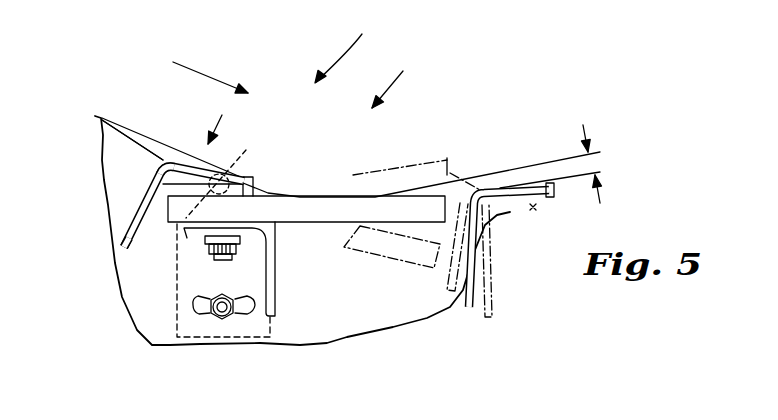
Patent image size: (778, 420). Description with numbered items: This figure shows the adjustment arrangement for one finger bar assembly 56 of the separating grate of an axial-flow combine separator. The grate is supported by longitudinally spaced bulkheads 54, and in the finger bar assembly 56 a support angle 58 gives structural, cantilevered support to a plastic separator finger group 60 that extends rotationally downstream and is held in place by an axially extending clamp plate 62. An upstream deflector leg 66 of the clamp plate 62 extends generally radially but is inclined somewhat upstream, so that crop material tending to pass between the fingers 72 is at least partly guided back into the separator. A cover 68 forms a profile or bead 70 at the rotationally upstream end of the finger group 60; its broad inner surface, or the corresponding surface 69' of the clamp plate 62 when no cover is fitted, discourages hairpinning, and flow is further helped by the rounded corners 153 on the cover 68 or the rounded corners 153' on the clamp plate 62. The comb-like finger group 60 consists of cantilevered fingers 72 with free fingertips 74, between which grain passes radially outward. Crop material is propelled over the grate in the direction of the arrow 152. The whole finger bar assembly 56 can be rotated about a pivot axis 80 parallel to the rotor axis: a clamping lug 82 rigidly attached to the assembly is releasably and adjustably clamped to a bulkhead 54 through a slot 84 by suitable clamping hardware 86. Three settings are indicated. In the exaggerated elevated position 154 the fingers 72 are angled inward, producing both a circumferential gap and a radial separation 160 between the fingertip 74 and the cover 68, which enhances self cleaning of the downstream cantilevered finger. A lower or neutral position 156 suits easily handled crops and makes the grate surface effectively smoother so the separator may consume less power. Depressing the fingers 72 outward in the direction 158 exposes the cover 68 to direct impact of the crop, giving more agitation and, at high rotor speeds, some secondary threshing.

The bulkhead 54 is at (392, 330).
The finger bar assembly 56 is at (400, 80).
The support angle 58 is at (277, 256).
The separator finger group 60 is at (338, 50).
The clamp plate 62 is at (250, 186).
The deflector leg 66 is at (132, 225).
The cover 68 is at (158, 182).
The surface of clamp plate 69' is at (175, 137).
The bead 70 is at (221, 119).
The finger 72 is at (402, 167).
The fingertip 74 is at (454, 170).
The pivot axis 80 is at (225, 196).
The clamping lug 82 is at (176, 298).
The slot 84 is at (246, 313).
The clamping hardware 86 is at (217, 318).
The arrow 152 is at (208, 72).
The rounded corner 153 is at (144, 197).
The rounded corner of clamp plate 153' is at (116, 121).
The elevated finger position 154 is at (446, 158).
The neutral finger position 156 is at (448, 223).
The depressed finger direction 158 is at (370, 268).
The radial separation 160 is at (593, 160).